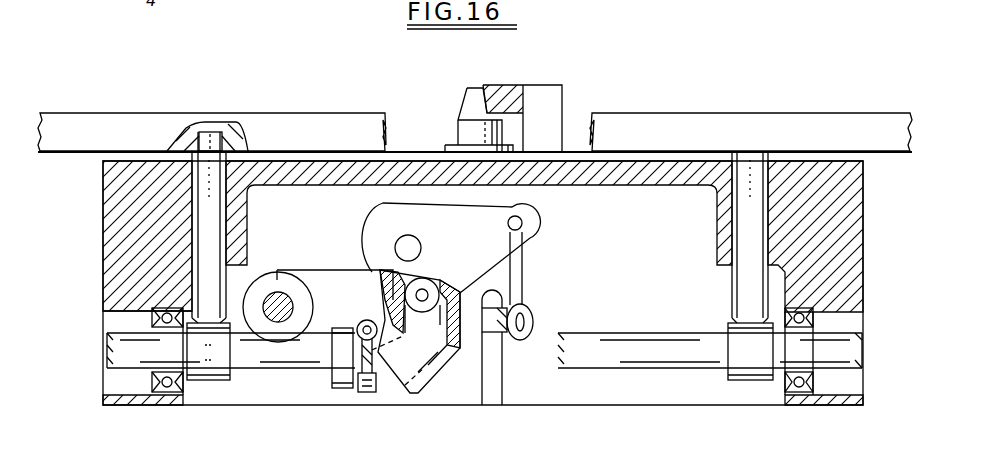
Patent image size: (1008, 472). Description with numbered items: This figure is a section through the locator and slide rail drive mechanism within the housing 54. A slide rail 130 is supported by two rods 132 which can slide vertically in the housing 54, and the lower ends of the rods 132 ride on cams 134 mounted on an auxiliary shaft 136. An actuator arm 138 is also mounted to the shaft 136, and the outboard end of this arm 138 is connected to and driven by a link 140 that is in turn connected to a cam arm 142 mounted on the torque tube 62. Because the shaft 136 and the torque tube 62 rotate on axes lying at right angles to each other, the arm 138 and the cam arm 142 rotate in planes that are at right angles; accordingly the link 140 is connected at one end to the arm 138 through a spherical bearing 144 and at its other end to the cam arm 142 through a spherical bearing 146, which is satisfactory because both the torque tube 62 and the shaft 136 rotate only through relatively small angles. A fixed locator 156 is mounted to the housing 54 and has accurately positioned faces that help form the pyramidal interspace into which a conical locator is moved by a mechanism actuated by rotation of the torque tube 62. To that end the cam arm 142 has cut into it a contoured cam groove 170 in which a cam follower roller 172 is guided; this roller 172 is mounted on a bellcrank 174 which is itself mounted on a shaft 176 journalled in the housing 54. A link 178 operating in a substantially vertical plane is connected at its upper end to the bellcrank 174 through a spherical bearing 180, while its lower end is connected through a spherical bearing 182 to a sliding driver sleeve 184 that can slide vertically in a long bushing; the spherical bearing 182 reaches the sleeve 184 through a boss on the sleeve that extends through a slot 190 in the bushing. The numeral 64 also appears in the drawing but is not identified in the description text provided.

The housing 54 is at (860, 282).
The torque tube 62 is at (276, 282).
The gear shaft 64 is at (288, 304).
The slide rail 130 is at (735, 113).
The rod 132 is at (215, 241).
The cam 134 is at (205, 380).
The auxiliary shaft 136 is at (120, 351).
The actuator arm 138 is at (340, 376).
The link 140 is at (373, 383).
The cam arm 142 is at (306, 276).
The spherical bearing 144 is at (368, 388).
The spherical bearing 146 is at (366, 320).
The fixed locator 156 is at (553, 108).
The cam groove 170 is at (426, 354).
The cam follower roller 172 is at (427, 278).
The bellcrank 174 is at (366, 232).
The shaft 176 is at (403, 236).
The link 178 is at (526, 281).
The spherical bearing 180 is at (536, 227).
The spherical bearing 182 is at (535, 306).
The sliding driver sleeve 184 is at (490, 326).
The slot 190 is at (485, 368).